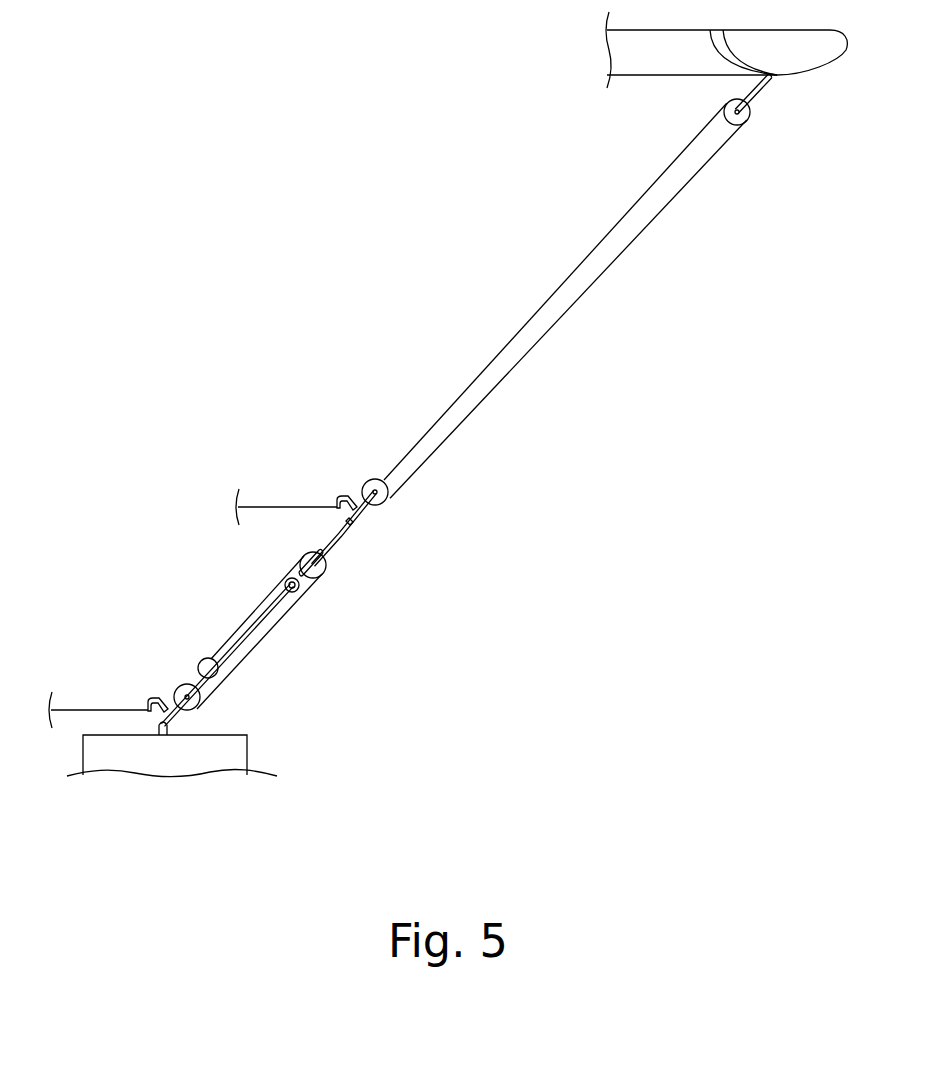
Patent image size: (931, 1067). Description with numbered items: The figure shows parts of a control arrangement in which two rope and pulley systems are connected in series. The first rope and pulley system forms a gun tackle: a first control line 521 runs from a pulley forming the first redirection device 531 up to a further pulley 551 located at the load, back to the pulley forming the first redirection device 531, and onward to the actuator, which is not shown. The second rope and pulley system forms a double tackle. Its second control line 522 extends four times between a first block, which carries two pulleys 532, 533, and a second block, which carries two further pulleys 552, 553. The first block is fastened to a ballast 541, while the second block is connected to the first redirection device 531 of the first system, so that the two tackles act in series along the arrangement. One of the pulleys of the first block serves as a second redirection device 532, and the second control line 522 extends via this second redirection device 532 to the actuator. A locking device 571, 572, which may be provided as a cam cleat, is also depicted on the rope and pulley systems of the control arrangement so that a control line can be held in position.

The first control line 521 is at (601, 274).
The second control line 522 is at (270, 636).
The first redirection device 531 is at (390, 502).
The second redirection device 532 is at (198, 711).
The pulley 533 is at (200, 659).
The ballast 541 is at (173, 768).
The further pulley 551 is at (748, 115).
The further pulley 552 is at (328, 567).
The further pulley 553 is at (303, 592).
The locking device 571 is at (340, 497).
The locking device 572 is at (153, 700).